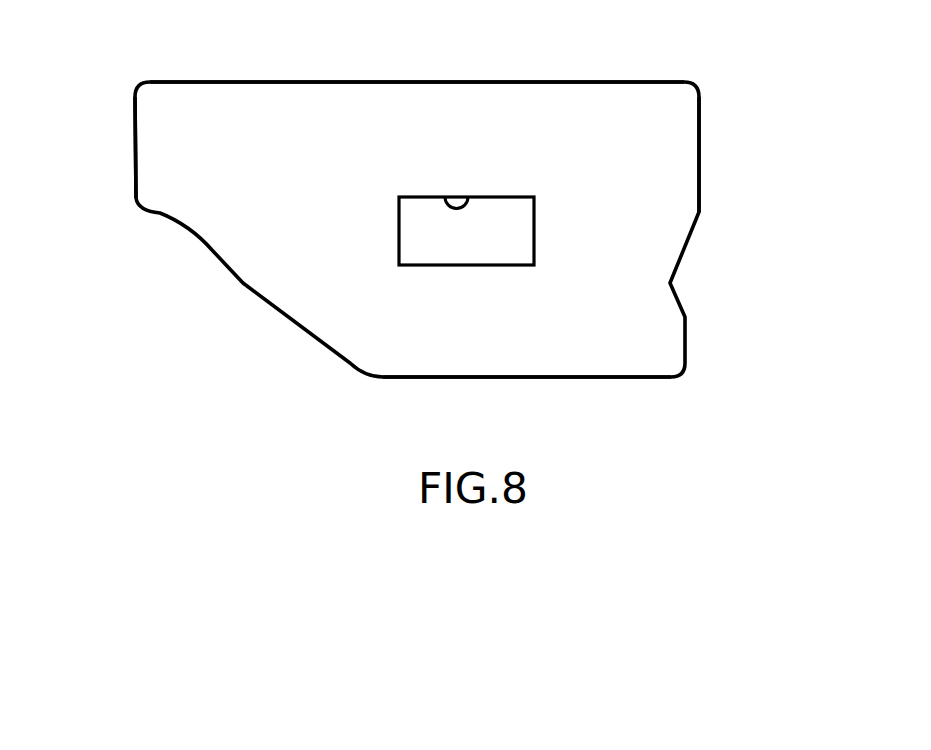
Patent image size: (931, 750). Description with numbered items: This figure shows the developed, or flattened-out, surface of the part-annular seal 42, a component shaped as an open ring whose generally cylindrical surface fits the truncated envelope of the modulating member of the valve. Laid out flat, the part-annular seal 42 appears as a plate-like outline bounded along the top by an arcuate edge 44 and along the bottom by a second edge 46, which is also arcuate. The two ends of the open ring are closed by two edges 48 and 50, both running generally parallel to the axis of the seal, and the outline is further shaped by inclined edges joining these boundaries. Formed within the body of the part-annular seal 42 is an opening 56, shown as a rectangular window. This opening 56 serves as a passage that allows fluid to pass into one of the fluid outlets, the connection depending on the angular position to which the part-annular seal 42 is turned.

The part-annular seal 42 is at (700, 143).
The arcuate edge 44 is at (577, 81).
The edge 46 is at (513, 378).
The edge 48 is at (701, 180).
The edge 50 is at (135, 122).
The opening 56 is at (468, 206).